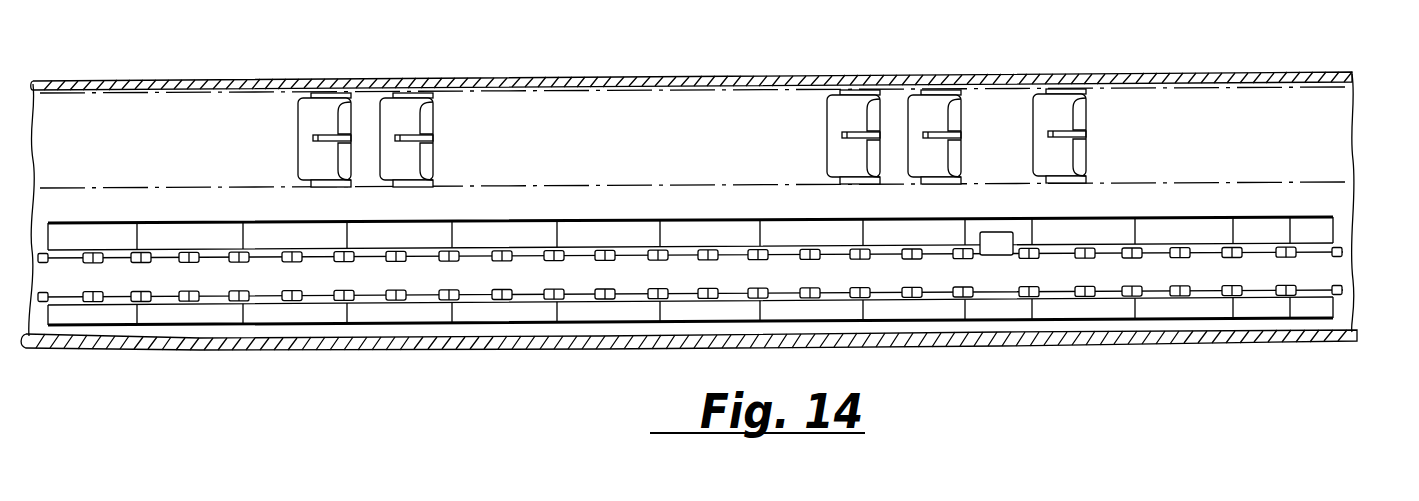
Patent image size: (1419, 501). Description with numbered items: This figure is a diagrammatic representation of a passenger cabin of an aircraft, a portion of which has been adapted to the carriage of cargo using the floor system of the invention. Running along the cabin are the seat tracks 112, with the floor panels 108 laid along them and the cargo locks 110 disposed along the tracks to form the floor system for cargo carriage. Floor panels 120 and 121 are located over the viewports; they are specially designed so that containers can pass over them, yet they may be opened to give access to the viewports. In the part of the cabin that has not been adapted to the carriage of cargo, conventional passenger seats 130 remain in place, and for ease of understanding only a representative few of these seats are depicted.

The floor panels 108 is at (1320, 232).
The cargo locks 110 is at (1290, 248).
The seat tracks 112 is at (1313, 255).
The floor panel 120 is at (1014, 88).
The floor panel 121 is at (1002, 250).
The passenger seats 130 is at (395, 108).